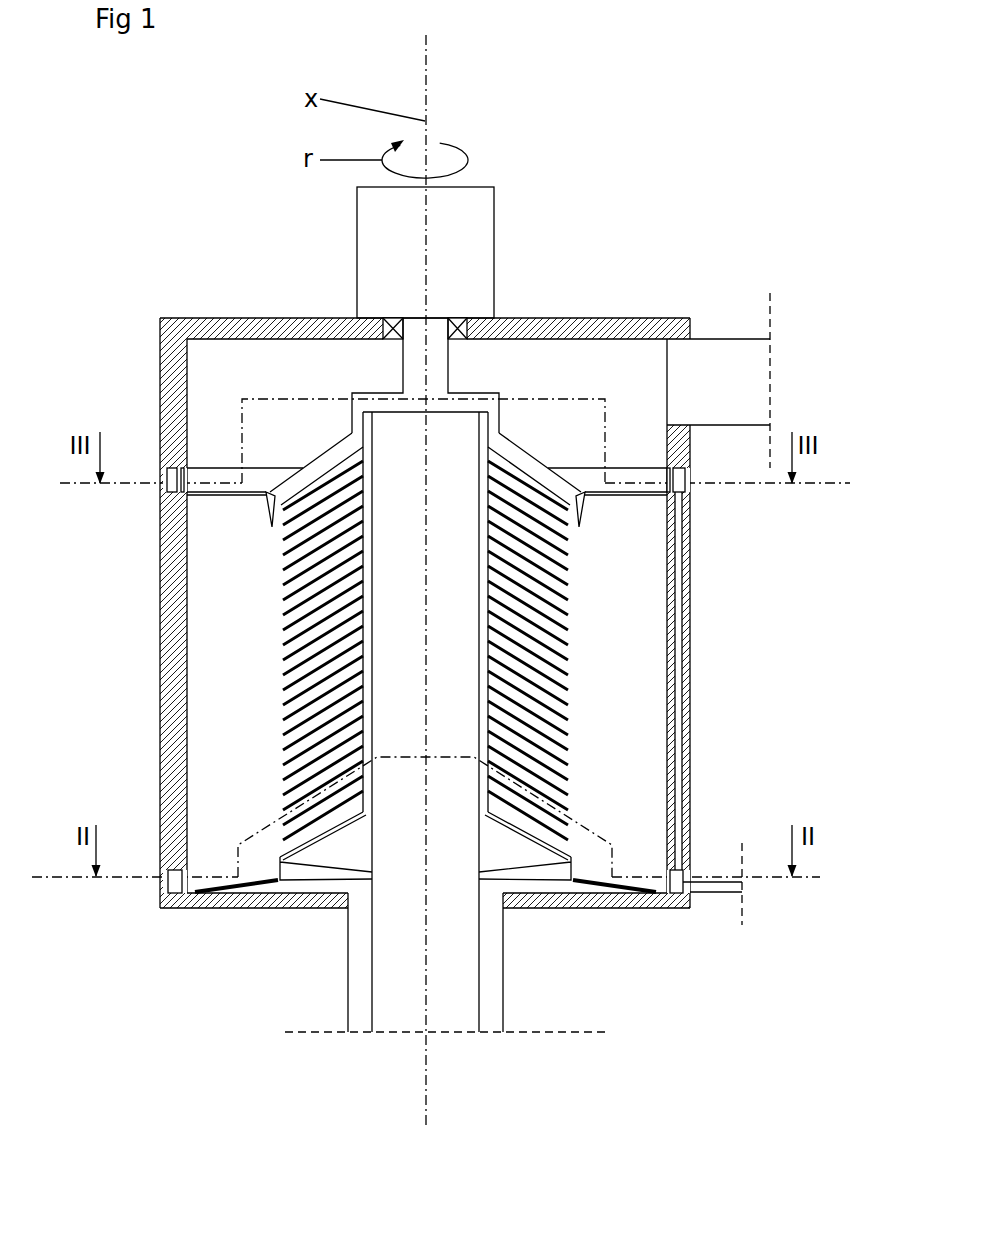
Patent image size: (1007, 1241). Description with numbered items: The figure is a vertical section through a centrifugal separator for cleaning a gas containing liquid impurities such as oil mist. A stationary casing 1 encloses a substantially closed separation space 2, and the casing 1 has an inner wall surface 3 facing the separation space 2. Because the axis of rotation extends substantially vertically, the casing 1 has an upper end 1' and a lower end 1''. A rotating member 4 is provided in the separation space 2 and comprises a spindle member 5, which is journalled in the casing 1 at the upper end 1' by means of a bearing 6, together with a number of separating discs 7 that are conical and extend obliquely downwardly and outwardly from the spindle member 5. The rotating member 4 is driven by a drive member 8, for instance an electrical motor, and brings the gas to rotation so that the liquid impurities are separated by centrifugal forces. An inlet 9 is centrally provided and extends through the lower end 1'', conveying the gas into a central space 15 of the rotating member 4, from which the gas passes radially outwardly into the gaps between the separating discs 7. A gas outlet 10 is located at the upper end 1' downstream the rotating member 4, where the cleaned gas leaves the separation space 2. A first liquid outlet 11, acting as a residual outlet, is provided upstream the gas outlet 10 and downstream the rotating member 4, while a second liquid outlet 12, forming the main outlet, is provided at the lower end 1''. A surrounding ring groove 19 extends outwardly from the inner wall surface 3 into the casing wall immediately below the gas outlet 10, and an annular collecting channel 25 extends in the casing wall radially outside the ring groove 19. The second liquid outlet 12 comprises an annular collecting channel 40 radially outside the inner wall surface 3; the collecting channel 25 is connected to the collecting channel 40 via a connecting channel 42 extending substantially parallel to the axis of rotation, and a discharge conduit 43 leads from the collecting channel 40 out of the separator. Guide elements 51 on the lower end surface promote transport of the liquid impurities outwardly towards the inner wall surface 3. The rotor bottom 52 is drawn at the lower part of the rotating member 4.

The stationary casing 1 is at (356, 613).
The upper end of the casing 1' is at (425, 291).
The lower end of the casing 1'' is at (425, 939).
The separation space 2 is at (213, 583).
The inner wall surface 3 is at (205, 546).
The rotating member 4 is at (321, 650).
The spindle member 5 is at (408, 376).
The bearing 6 is at (468, 320).
The separating discs 7 is at (283, 686).
The drive member 8 is at (482, 217).
The inlet 9 is at (403, 910).
The gas outlet 10 is at (713, 358).
The first liquid outlet 11 is at (653, 510).
The second liquid outlet 12 is at (653, 854).
The central space 15 is at (430, 613).
The ring groove 19 is at (587, 467).
The annular collecting channel 25 is at (683, 490).
The annular collecting channel 40 is at (172, 884).
The connecting channel 42 is at (680, 637).
The discharge conduit 43 is at (707, 890).
The guide elements 51 is at (238, 893).
The rotor bottom 52 is at (277, 878).